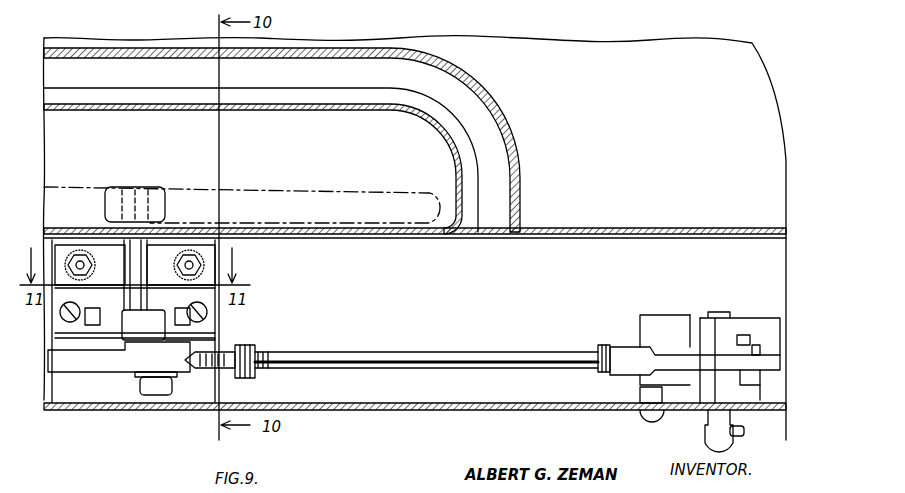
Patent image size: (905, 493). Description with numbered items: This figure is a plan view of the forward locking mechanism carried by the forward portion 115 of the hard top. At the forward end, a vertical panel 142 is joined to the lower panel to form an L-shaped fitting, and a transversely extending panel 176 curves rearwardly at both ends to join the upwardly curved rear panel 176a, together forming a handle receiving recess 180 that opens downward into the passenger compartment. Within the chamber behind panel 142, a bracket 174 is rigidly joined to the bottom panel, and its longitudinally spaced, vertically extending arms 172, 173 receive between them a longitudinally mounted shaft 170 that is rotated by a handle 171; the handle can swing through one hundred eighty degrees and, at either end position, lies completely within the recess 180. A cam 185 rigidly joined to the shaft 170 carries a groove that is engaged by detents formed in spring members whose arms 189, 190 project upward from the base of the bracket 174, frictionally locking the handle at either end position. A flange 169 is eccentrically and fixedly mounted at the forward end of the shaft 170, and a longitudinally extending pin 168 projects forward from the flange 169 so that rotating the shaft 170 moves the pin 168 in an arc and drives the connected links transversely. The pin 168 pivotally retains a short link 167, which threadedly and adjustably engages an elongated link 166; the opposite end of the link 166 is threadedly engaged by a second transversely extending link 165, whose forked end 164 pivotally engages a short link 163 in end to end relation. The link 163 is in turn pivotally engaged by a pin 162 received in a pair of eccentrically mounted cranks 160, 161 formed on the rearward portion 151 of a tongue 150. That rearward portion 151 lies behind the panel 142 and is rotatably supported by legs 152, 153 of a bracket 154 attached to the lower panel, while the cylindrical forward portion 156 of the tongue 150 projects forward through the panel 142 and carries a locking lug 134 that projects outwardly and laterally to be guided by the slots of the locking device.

The forward portion 115 is at (684, 6).
The handle receiving recess 180 is at (120, 143).
The rear panel 176a is at (280, 110).
The panel 176 is at (335, 234).
The handle 171 is at (282, 200).
The shaft 170 is at (125, 258).
The bracket 174 is at (160, 250).
The arm 173 is at (205, 240).
The arm 189 is at (134, 268).
The arm 190 is at (98, 320).
The arm 172 is at (200, 336).
The cam 185 is at (140, 322).
The flange 169 is at (175, 340).
The pin 168 is at (160, 396).
The short link 167 is at (250, 350).
The elongated link 166 is at (514, 360).
The second link 165 is at (625, 352).
The forked end 164 is at (655, 365).
The bracket 154 is at (642, 340).
The leg 153 is at (680, 316).
The rearward portion 151 is at (712, 330).
The short link 163 is at (710, 358).
The pin 162 is at (745, 334).
The crank 160 is at (760, 352).
The crank 161 is at (752, 376).
The leg 152 is at (765, 395).
The vertical panel 142 is at (490, 406).
The cylindrical forward portion 156 is at (700, 418).
The tongue 150 is at (706, 440).
The locking lug 134 is at (744, 434).